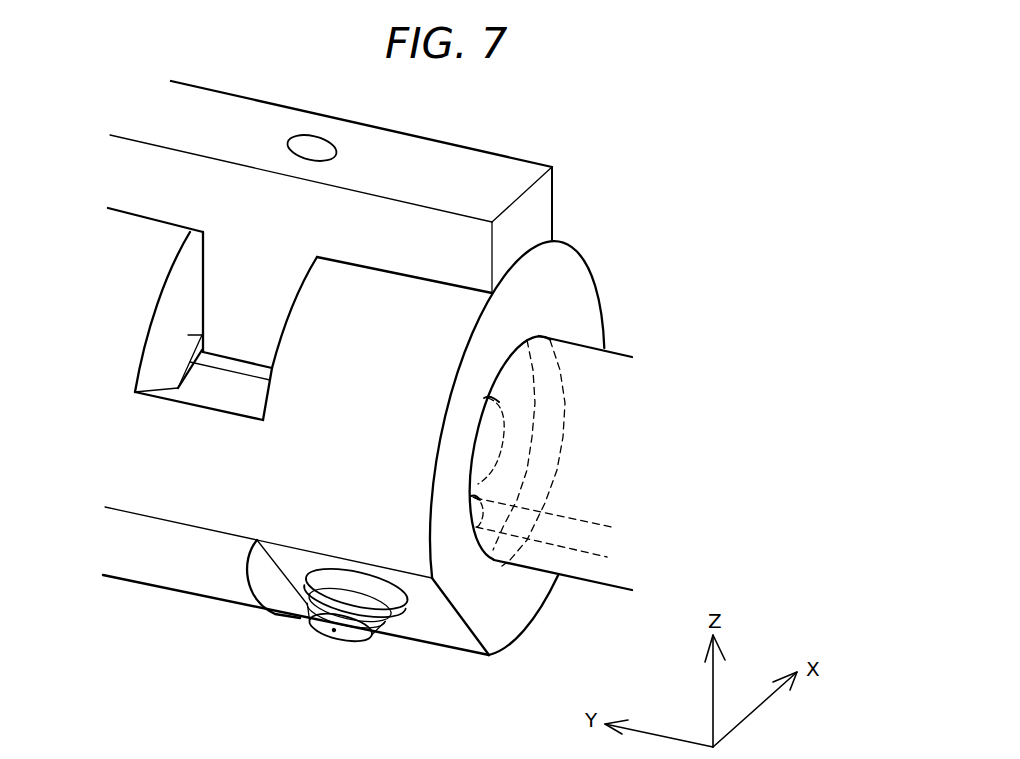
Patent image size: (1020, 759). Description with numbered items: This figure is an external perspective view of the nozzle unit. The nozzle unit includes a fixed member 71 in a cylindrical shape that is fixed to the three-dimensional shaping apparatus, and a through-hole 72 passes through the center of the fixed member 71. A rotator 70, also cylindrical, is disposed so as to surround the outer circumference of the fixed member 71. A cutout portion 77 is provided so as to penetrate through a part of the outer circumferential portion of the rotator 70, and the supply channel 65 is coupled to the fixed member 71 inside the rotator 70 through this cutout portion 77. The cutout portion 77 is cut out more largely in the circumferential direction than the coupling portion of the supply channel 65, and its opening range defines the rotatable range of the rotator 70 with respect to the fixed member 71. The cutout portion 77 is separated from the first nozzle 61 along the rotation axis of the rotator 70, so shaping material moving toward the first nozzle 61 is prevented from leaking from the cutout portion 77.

The rotator 70 is at (162, 490).
The fixed member 71 is at (245, 390).
The cutout portion 77 is at (162, 363).
The through-hole 72 is at (503, 427).
The supply channel 65 is at (315, 148).
The first nozzle 61 is at (377, 643).